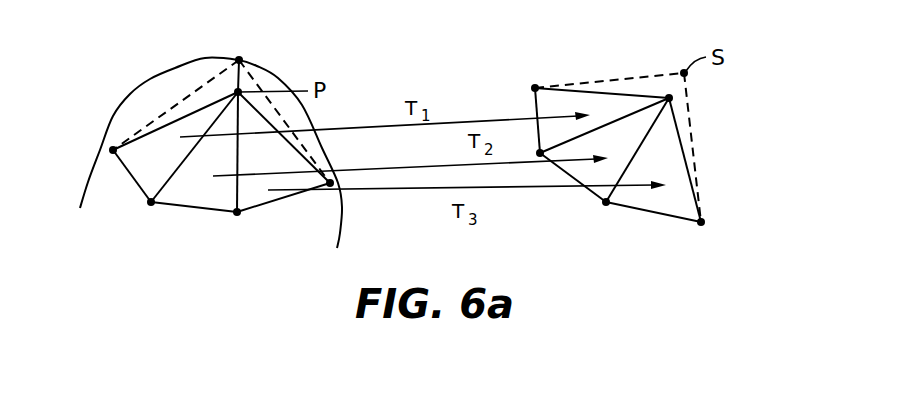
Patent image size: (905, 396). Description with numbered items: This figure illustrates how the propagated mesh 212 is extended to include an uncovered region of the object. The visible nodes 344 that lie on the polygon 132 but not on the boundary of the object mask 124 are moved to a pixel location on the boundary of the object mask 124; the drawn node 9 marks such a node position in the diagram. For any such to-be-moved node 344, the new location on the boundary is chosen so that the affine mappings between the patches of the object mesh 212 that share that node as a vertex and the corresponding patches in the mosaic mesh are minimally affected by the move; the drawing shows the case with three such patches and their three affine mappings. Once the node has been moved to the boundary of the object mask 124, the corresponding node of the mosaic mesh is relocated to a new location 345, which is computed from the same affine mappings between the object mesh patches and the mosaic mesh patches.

The vertex point on sphere 9 is at (240, 59).
The object mask 124 is at (276, 78).
The polygon 132 is at (163, 124).
The propagated mesh 212 is at (142, 195).
The to-be-moved node 344 is at (213, 59).
The new location s of the corresponding mosaic mesh node 345 is at (684, 92).